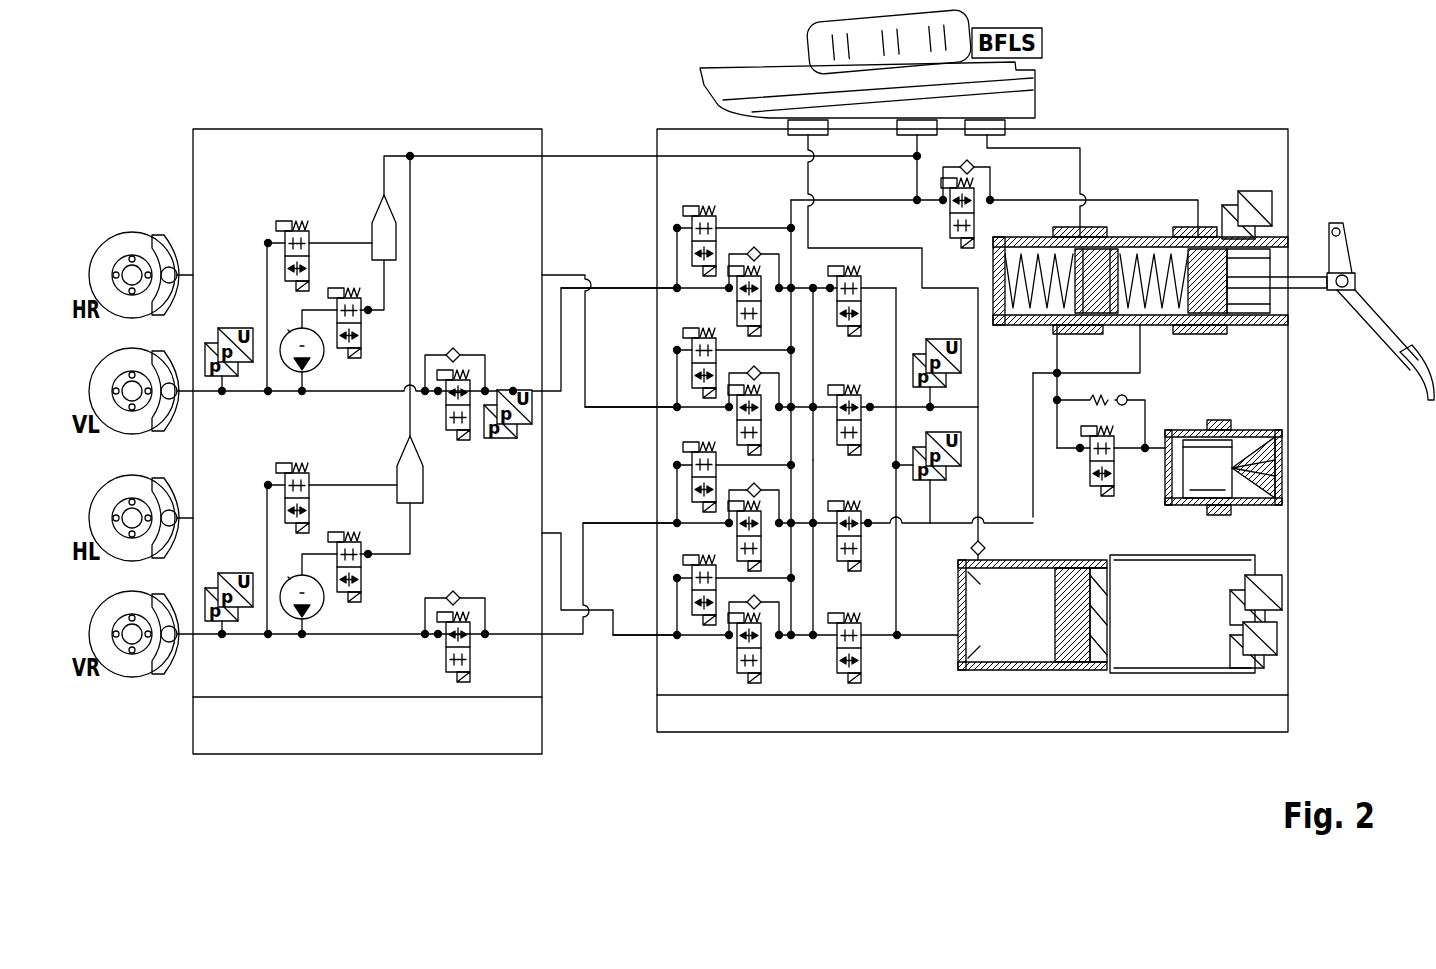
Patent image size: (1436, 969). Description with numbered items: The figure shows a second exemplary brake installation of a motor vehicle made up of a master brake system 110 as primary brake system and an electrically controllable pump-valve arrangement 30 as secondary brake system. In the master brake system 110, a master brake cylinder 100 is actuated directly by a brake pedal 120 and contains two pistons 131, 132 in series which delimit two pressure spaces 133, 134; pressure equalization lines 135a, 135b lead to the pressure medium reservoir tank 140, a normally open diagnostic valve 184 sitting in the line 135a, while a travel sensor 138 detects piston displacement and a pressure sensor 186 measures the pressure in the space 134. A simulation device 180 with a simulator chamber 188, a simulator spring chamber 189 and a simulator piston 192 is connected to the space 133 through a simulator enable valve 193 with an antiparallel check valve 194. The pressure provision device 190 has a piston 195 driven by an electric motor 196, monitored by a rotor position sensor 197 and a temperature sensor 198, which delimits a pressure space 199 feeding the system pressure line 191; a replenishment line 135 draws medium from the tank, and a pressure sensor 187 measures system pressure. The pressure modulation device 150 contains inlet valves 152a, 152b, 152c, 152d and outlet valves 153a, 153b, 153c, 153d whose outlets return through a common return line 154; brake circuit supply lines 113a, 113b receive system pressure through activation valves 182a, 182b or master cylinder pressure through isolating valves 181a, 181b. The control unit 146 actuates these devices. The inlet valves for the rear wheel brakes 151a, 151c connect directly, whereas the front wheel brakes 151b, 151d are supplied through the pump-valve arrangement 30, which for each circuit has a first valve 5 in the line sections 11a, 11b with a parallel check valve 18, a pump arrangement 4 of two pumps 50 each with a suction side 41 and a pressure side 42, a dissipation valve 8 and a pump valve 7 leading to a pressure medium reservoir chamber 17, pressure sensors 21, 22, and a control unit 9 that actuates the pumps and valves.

The pump arrangement 4 is at (313, 402).
The first valve 5 is at (449, 433).
The third valve 7 is at (362, 326).
The second valve 8 is at (311, 240).
The second electronic open-loop and closed-loop control unit 9 is at (465, 730).
The line section 11a is at (494, 383).
The line section 11b is at (279, 394).
The pressure medium reservoir chamber 17 is at (398, 240).
The check valve 18 is at (458, 348).
The pressure detection device 21 is at (232, 330).
The pressure detection device 22 is at (518, 440).
The pump-valve arrangement 30 is at (262, 116).
The suction side 41 is at (296, 322).
The pressure side 42 is at (309, 374).
The pump 50 is at (312, 345).
The master brake cylinder 100 is at (1268, 335).
The master brake system 110 is at (1193, 110).
The brake circuit supply line 113a is at (818, 557).
The brake circuit supply line 113b is at (818, 330).
The brake pedal 120 is at (1377, 320).
The first piston 131 is at (1231, 330).
The second piston 132 is at (1105, 300).
The pressure space 133 is at (1170, 293).
The pressure space 134 is at (1050, 300).
The replenishment line 135 is at (985, 490).
The pressure equalization line 135a is at (1186, 197).
The pressure equalization line 135b is at (1083, 168).
The travel sensor 138 is at (1278, 228).
The pressure medium reservoir tank 140 is at (1018, 98).
The first electronic open-loop and closed-loop control unit 146 is at (885, 712).
The pressure modulation device 150 is at (731, 205).
The wheel brake 151a is at (162, 250).
The wheel brake 151b is at (162, 366).
The wheel brake 151c is at (162, 492).
The wheel brake 151d is at (162, 608).
The inlet valve 152a is at (737, 300).
The inlet valve 152b is at (737, 418).
The inlet valve 152c is at (737, 533).
The inlet valve 152d is at (737, 645).
The outlet valve 153a is at (692, 247).
The outlet valve 153b is at (692, 370).
The outlet valve 153c is at (692, 483).
The outlet valve 153d is at (692, 597).
The common return line 154 is at (789, 218).
The simulation device 180 is at (1274, 463).
The isolating valve 181a is at (868, 545).
The isolating valve 181b is at (829, 442).
The activation valve 182a is at (845, 680).
The activation valve 182b is at (866, 273).
The diagnostic valve 184 is at (977, 212).
The pressure sensor 186 is at (918, 333).
The pressure sensor 187 is at (937, 504).
The simulator chamber 188 is at (1178, 505).
The simulator spring chamber 189 is at (1250, 430).
The pressure provision device 190 is at (1170, 658).
The system pressure line 191 is at (928, 640).
The simulator piston 192 is at (1228, 500).
The simulator enable valve 193 is at (1115, 465).
The check valve 194 is at (1118, 395).
The piston 195 is at (1063, 633).
The electric motor 196 is at (1168, 650).
The rotor position sensor 197 is at (1266, 617).
The temperature sensor 198 is at (1268, 650).
The pressure space 199 is at (1020, 633).